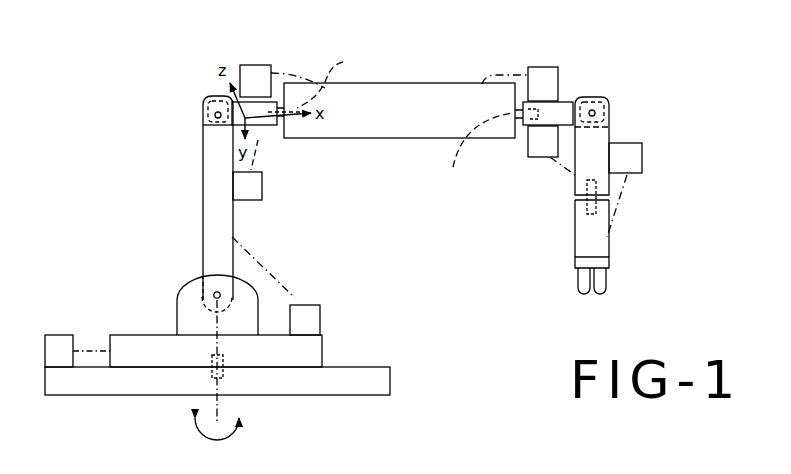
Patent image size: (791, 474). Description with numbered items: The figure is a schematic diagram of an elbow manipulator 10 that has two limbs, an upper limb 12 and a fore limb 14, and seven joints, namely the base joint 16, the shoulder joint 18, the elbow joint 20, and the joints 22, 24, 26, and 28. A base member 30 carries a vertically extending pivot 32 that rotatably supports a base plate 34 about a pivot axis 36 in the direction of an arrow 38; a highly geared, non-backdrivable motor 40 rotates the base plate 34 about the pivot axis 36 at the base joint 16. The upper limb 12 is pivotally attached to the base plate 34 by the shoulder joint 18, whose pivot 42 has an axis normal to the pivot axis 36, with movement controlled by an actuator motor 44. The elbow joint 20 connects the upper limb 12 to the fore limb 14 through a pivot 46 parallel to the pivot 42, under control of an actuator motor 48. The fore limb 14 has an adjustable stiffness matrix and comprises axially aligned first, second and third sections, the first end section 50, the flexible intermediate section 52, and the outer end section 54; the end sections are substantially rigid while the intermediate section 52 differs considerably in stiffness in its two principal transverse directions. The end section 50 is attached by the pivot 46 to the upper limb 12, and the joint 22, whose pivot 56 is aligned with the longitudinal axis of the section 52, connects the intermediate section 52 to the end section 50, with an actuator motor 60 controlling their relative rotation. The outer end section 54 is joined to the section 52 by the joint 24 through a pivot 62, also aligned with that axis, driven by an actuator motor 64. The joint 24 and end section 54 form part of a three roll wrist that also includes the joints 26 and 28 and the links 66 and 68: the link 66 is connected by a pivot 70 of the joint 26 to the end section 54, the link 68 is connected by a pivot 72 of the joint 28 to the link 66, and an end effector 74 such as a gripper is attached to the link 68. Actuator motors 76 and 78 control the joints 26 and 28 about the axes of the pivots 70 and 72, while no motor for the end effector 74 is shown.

The elbow manipulator 10 is at (111, 216).
The upper limb 12 is at (203, 163).
The fore limb 14 is at (388, 141).
The base joint 16 is at (204, 377).
The shoulder joint 18 is at (197, 300).
The elbow joint 20 is at (198, 112).
The joint 22 is at (291, 126).
The joint 24 is at (509, 126).
The joint 26 is at (606, 113).
The joint 28 is at (571, 199).
The base member 30 is at (388, 395).
The pivot 32 is at (222, 373).
The base plate 34 is at (322, 350).
The pivot axis 36 is at (208, 404).
The arrow 38 is at (233, 437).
The motor 40 is at (66, 335).
The pivot 42 is at (214, 292).
The actuator motor 44 is at (320, 318).
The pivot 46 is at (205, 100).
The actuator motor 48 is at (262, 190).
The first end section 50 is at (273, 127).
The intermediate section 52 is at (393, 85).
The outer end section 54 is at (562, 103).
The pivot 56 is at (342, 77).
The actuator motor 60 is at (246, 65).
The pivot 62 is at (467, 145).
The actuator motor 64 is at (530, 67).
The link 66 is at (605, 134).
The link 68 is at (575, 238).
The pivot 70 is at (597, 110).
The pivot 72 is at (593, 213).
The end effector 74 is at (608, 263).
The actuator motor 76 is at (528, 158).
The actuator motor 78 is at (642, 158).